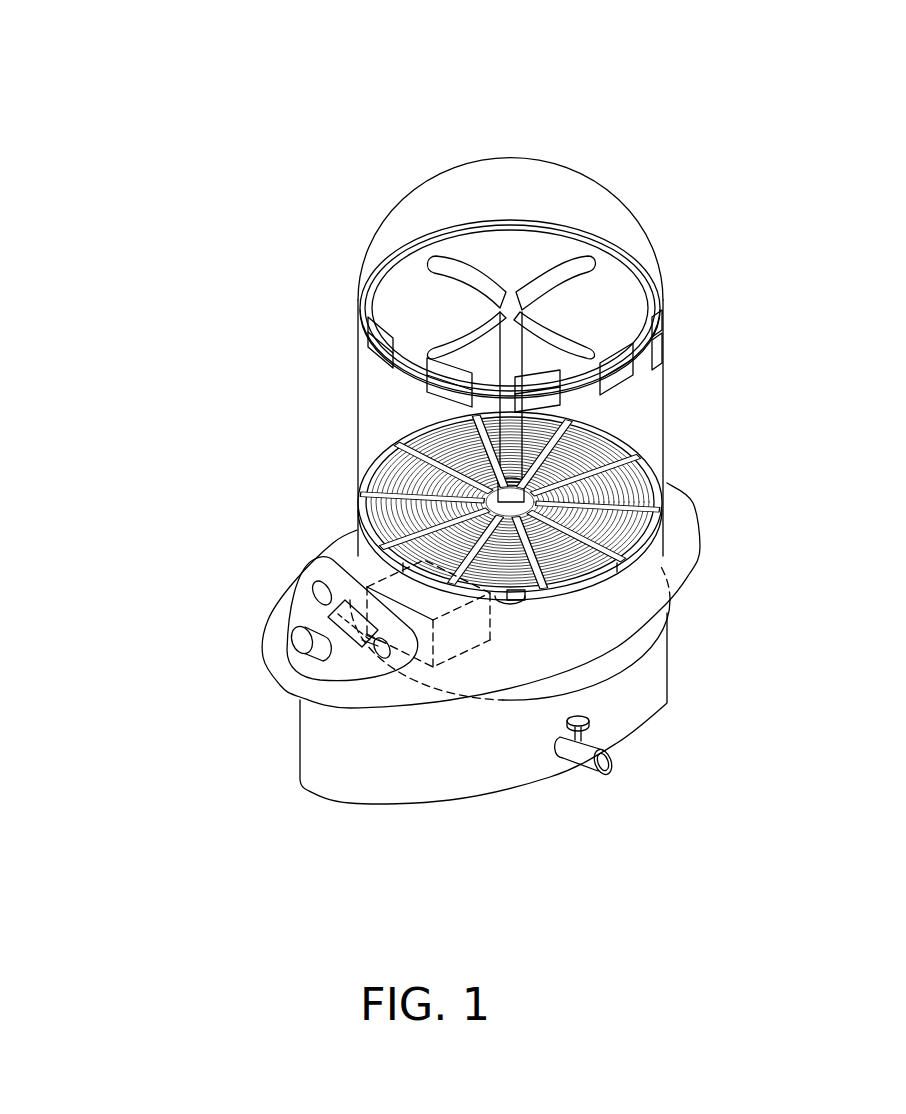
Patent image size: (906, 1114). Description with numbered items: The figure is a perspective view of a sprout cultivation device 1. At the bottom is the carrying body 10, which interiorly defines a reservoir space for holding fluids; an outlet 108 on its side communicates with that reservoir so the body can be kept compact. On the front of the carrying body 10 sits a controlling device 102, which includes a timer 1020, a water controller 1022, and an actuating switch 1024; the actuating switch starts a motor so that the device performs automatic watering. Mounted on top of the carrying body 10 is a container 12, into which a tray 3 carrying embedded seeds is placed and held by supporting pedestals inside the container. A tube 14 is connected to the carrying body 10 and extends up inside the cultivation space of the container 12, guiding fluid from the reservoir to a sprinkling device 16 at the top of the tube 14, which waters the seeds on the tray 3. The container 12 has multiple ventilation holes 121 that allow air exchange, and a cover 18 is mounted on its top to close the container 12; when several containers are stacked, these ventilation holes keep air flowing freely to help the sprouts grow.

The sprout cultivation device 1 is at (290, 205).
The cover 18 is at (518, 187).
The container 12 is at (367, 397).
The ventilation holes 121 is at (634, 366).
The sprinkling device 16 is at (562, 275).
The tube 14 is at (513, 338).
The tray 3 is at (383, 457).
The carrying body 10 is at (480, 753).
The outlet 108 is at (607, 758).
The controlling device 102 is at (118, 563).
The timer 1020 is at (322, 593).
The actuating switch 1024 is at (365, 638).
The water controller 1022 is at (300, 640).